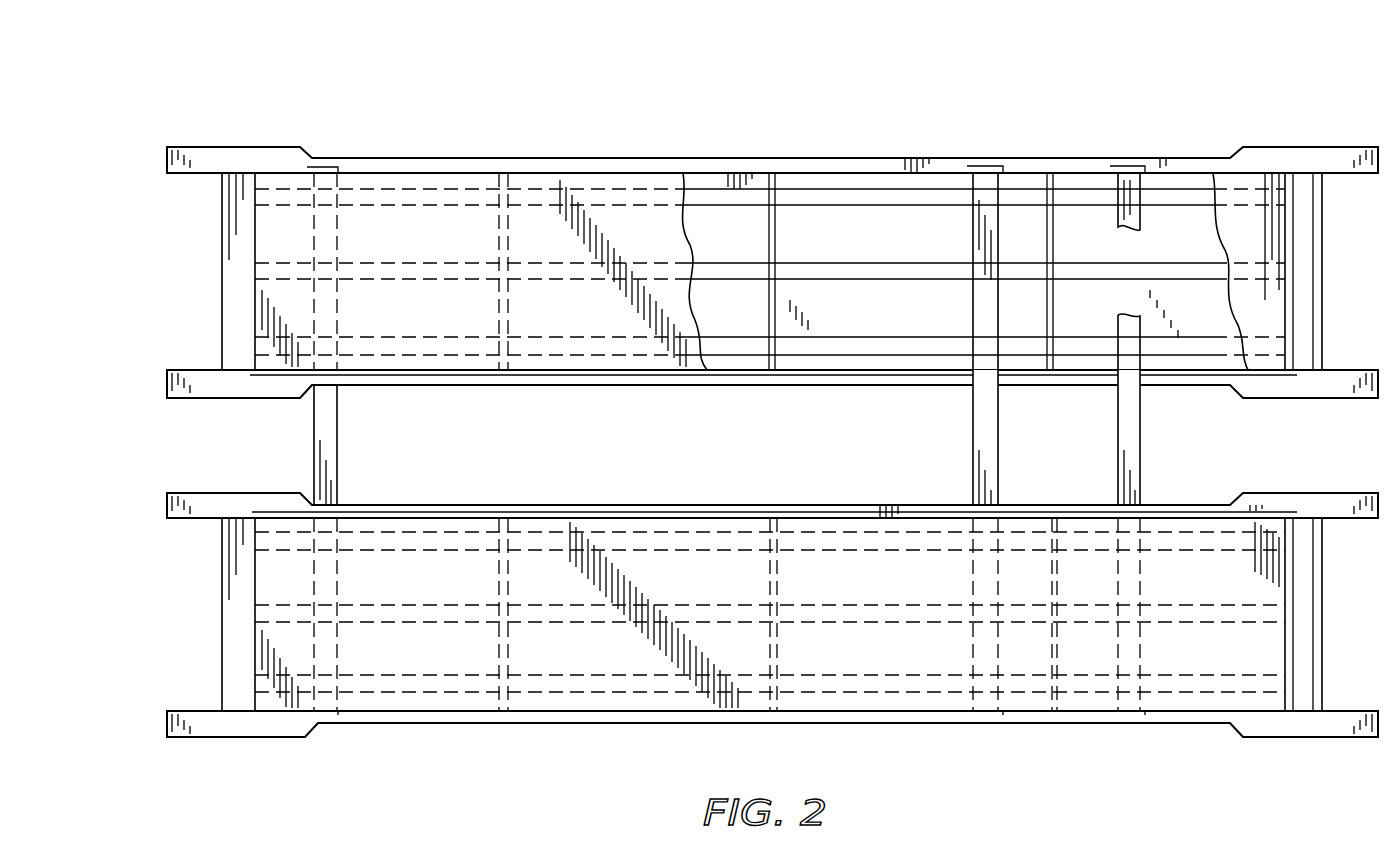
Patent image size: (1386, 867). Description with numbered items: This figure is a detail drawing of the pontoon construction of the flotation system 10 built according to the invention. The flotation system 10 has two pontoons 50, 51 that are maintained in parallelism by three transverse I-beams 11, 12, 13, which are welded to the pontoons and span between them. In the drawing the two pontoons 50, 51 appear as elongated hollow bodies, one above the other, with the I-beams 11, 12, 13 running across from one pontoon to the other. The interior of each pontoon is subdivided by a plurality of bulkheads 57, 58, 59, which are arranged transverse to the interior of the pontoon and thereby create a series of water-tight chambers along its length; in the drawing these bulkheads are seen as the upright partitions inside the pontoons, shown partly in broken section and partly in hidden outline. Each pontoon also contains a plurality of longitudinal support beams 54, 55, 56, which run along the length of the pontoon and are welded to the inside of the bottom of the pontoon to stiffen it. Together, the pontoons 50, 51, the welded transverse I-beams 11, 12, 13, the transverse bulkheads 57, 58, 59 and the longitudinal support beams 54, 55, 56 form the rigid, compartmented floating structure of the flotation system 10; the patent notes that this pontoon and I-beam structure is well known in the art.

The flotation system 10 is at (772, 412).
The transverse I-beam 11 is at (337, 437).
The transverse I-beam 12 is at (998, 440).
The transverse I-beam 13 is at (1140, 440).
The pontoon 50 is at (590, 723).
The pontoon 51 is at (742, 160).
The longitudinal support beam 54 is at (860, 198).
The longitudinal support beam 55 is at (833, 268).
The longitudinal support beam 56 is at (864, 342).
The bulkhead 57 is at (508, 313).
The bulkhead 58 is at (777, 313).
The bulkhead 59 is at (1055, 306).